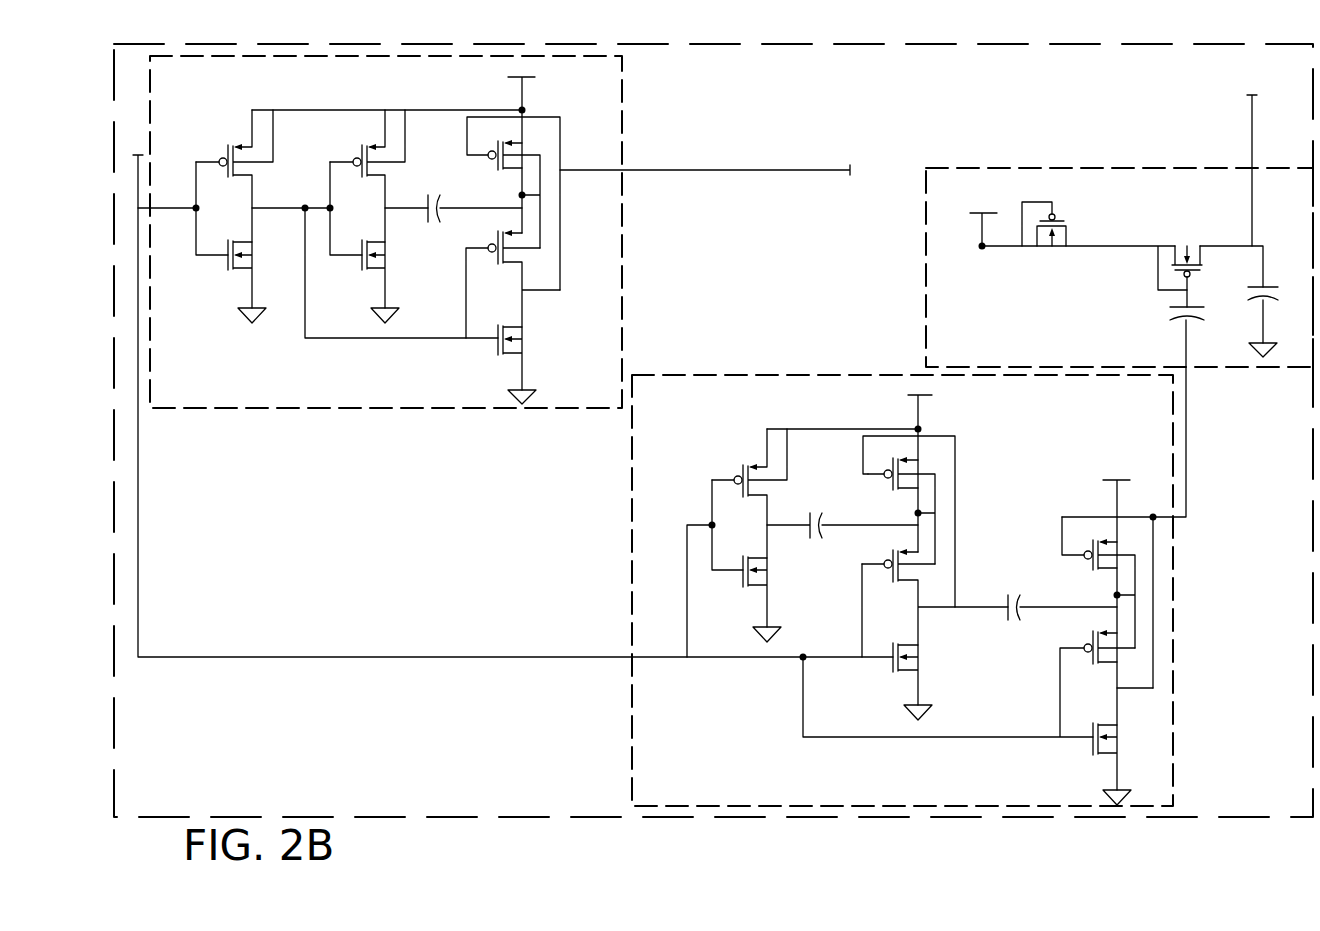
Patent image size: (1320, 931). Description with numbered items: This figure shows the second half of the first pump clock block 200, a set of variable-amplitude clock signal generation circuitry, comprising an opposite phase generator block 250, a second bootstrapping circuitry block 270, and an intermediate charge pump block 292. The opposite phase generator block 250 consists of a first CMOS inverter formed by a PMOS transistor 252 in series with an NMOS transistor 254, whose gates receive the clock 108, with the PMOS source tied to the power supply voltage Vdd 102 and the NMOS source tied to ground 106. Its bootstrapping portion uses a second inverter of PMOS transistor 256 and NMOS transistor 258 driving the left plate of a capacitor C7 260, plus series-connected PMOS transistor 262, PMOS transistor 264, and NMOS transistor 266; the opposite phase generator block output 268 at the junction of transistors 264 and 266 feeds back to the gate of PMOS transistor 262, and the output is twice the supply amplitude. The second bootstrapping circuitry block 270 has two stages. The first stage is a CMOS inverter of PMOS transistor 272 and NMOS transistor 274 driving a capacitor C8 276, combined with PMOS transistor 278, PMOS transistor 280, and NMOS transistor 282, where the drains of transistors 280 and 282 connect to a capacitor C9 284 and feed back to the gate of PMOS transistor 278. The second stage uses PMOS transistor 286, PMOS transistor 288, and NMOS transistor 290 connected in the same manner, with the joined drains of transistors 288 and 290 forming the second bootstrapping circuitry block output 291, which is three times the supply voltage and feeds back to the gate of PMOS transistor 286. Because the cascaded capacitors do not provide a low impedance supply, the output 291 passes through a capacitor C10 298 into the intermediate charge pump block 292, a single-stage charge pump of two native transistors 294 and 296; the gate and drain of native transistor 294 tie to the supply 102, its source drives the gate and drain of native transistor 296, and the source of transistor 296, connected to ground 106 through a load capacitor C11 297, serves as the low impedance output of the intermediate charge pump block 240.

The first pump clock block 200 is at (172, 788).
The power supply voltage Vdd 102 is at (510, 77).
The ground 106 is at (242, 308).
The clock 108 is at (140, 540).
The output of the intermediate charge pump block 240 is at (1252, 133).
The opposite phase generator block 250 is at (200, 393).
The PMOS transistor 252 is at (222, 140).
The NMOS transistor 254 is at (200, 258).
The PMOS transistor 256 is at (355, 142).
The NMOS transistor 258 is at (335, 262).
The capacitor C7 260 is at (440, 245).
The PMOS transistor 262 is at (548, 138).
The PMOS transistor 264 is at (550, 252).
The NMOS transistor 266 is at (552, 339).
The opposite phase generator block output 268 is at (720, 172).
The second bootstrapping circuitry block 270 is at (690, 783).
The PMOS transistor 272 is at (732, 460).
The NMOS transistor 274 is at (710, 574).
The capacitor C8 276 is at (823, 560).
The PMOS transistor 278 is at (945, 460).
The PMOS transistor 280 is at (950, 578).
The NMOS transistor 282 is at (945, 657).
The capacitor C9 284 is at (1017, 645).
The PMOS transistor 286 is at (1065, 562).
The PMOS transistor 288 is at (1060, 638).
The NMOS transistor 290 is at (1128, 748).
The second bootstrapping circuitry block output 291 is at (1186, 482).
The intermediate charge pump block 292 is at (978, 346).
The native transistor 294 is at (1068, 195).
The native transistor 296 is at (1176, 232).
The load capacitor C11 297 is at (1270, 287).
The capacitor C10 298 is at (1150, 308).